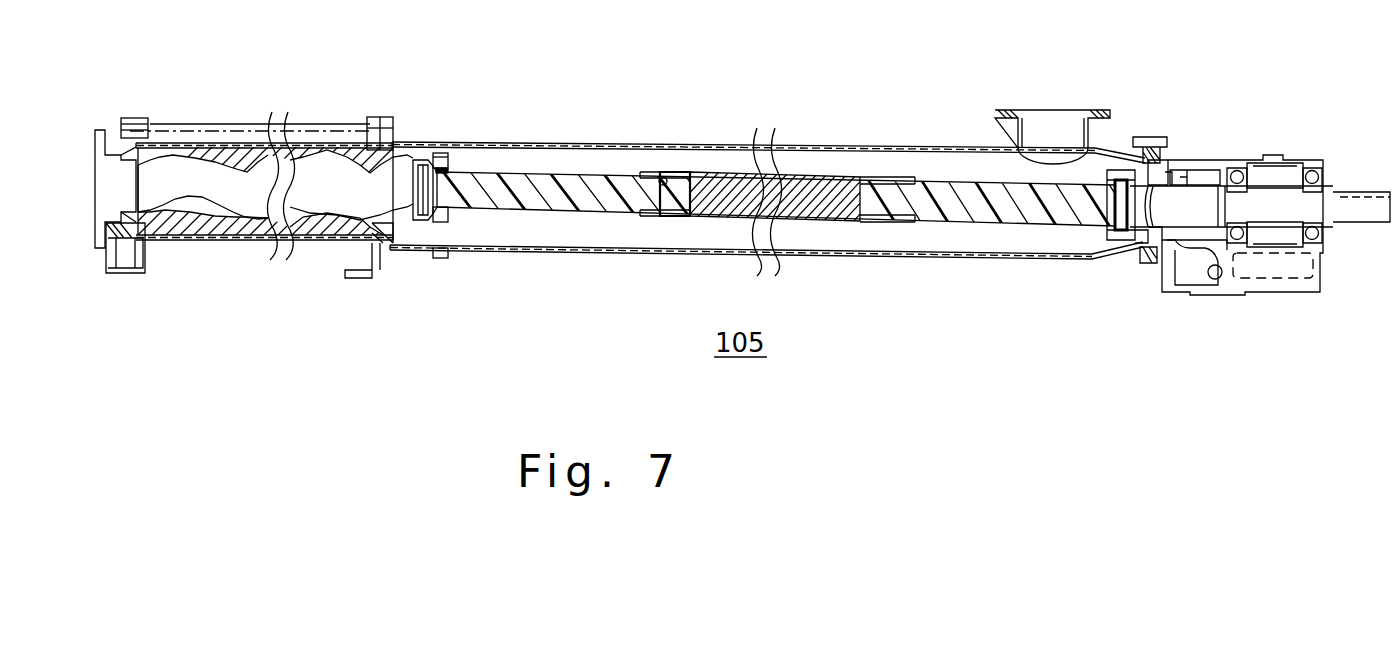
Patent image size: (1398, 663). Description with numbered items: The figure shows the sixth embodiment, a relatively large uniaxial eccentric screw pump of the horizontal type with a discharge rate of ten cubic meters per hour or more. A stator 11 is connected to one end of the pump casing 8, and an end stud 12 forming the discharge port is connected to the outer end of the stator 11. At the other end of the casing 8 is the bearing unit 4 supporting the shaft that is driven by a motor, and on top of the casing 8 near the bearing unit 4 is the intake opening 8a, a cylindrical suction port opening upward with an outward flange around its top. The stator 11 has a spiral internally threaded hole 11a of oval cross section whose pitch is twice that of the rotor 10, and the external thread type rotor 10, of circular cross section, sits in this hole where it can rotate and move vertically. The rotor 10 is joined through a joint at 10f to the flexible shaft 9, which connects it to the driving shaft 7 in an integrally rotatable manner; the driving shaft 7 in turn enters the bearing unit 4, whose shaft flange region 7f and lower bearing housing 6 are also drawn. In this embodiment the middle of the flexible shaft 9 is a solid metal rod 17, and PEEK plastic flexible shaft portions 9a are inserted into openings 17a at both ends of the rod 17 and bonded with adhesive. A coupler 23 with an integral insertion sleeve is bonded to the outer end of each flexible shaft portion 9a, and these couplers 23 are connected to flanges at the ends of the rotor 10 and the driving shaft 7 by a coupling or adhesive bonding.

The bearing unit 4 is at (1227, 158).
The bearing housing 6 is at (1180, 232).
The driving shaft 7 is at (1192, 200).
The shaft flange 7f is at (1122, 240).
The pump casing 8 is at (538, 142).
The intake opening 8a is at (1072, 133).
The flexible shaft 9 is at (822, 160).
The flexible shaft portions 9a is at (606, 200).
The rotor 10 is at (205, 168).
The coupling joint 10f is at (431, 222).
The stator 11 is at (243, 220).
The spiral internally threaded hole 11a is at (188, 212).
The end stud 12 is at (112, 233).
The solid metal rod 17 is at (724, 178).
The openings 17a is at (661, 178).
The coupler 23 is at (442, 160).